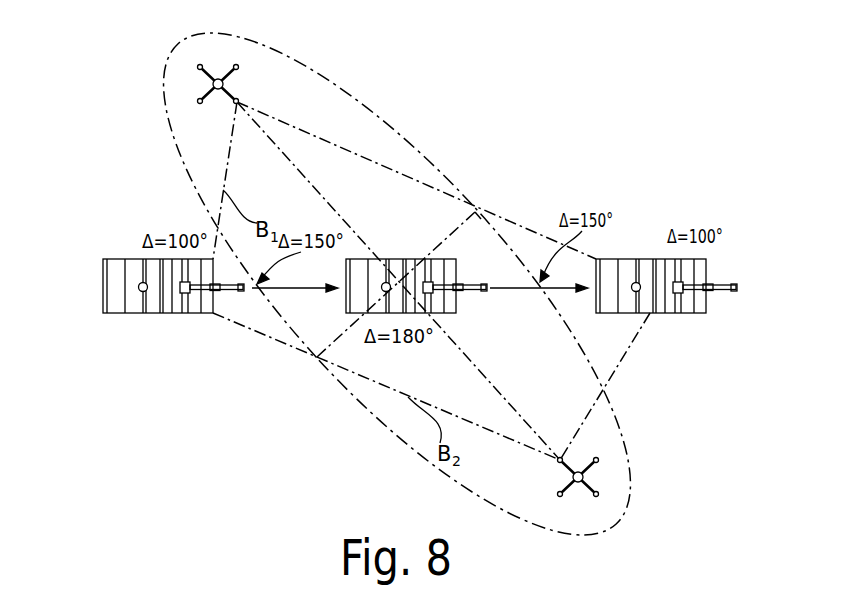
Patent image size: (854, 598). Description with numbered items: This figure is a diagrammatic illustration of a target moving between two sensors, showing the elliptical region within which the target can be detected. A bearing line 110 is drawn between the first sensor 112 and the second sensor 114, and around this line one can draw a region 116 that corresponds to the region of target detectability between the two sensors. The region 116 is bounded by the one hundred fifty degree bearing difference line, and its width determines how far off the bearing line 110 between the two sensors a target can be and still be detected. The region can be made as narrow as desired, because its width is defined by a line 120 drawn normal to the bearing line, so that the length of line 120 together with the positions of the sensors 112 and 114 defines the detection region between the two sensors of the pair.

The bearing line 110 is at (280, 152).
The sensor 112 is at (213, 90).
The sensor 114 is at (574, 479).
The region of target detectability 116 is at (420, 160).
The line normal to the bearing line 120 is at (450, 238).